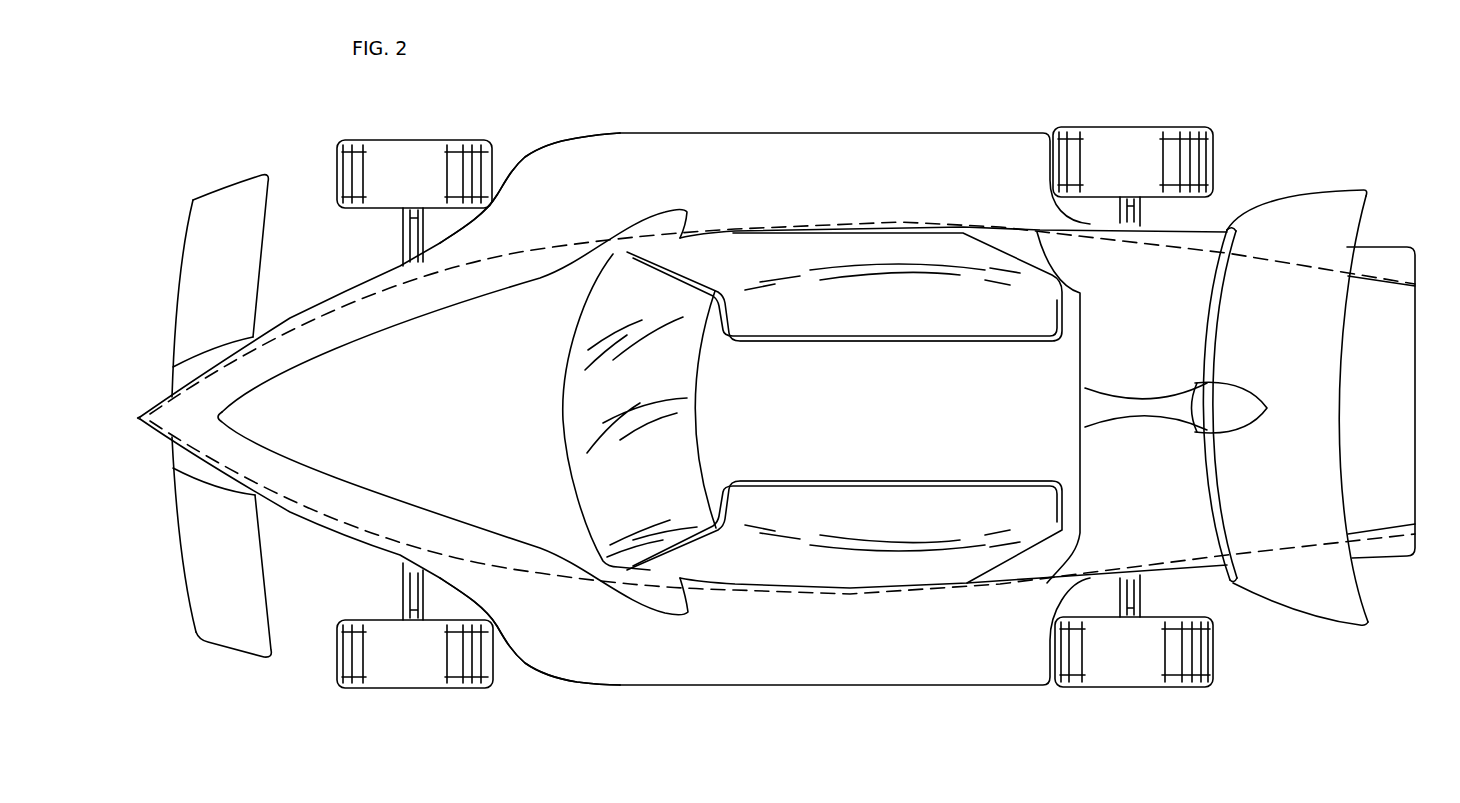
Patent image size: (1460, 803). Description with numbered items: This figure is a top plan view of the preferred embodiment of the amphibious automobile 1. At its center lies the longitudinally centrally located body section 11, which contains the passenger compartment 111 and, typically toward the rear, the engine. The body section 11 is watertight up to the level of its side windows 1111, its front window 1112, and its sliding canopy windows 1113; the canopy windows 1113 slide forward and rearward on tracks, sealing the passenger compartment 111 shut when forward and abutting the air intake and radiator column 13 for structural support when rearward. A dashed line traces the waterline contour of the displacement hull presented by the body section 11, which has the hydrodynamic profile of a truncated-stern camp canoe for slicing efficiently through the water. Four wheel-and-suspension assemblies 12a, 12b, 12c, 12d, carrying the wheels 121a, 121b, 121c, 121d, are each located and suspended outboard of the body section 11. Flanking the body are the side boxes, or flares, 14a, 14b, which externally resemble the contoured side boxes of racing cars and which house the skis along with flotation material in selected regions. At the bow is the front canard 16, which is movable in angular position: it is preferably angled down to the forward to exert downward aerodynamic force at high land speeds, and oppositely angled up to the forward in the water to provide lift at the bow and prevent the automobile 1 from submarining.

The amphibious automobile 1 is at (961, 78).
The body section 11 is at (400, 431).
The passenger compartment 111 is at (1017, 308).
The side windows 1111 is at (875, 313).
The front window 1112 is at (630, 391).
The canopy windows 1113 is at (787, 419).
The wheel-and-suspension assembly 12a is at (402, 139).
The wheel-and-suspension assembly 12b is at (1098, 126).
The wheel-and-suspension assembly 12c is at (400, 688).
The wheel-and-suspension assembly 12d is at (1112, 688).
The wheel 121a is at (448, 186).
The wheel 121b is at (1156, 178).
The wheel 121c is at (448, 663).
The wheel 121d is at (1160, 654).
The air intake and radiator column 13 is at (1272, 356).
The side box 14a is at (774, 189).
The side box 14b is at (774, 669).
The front canard 16 is at (192, 275).